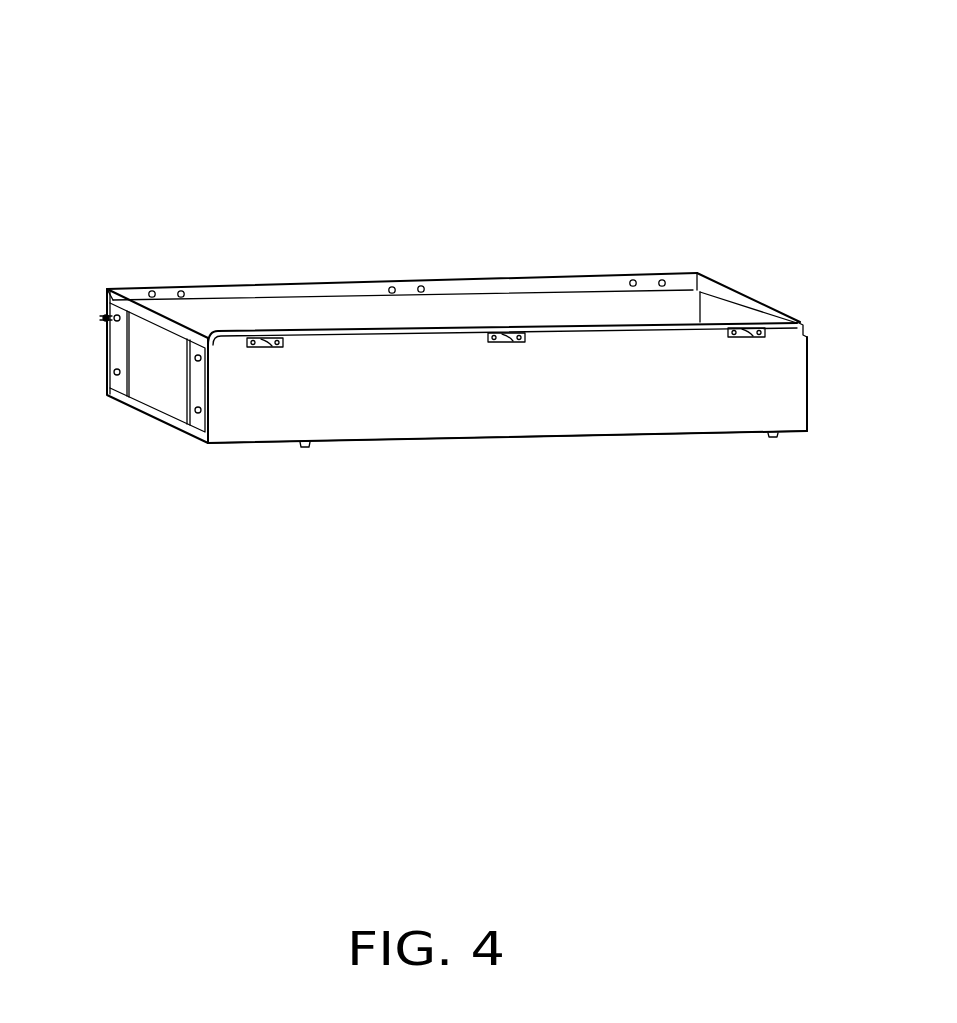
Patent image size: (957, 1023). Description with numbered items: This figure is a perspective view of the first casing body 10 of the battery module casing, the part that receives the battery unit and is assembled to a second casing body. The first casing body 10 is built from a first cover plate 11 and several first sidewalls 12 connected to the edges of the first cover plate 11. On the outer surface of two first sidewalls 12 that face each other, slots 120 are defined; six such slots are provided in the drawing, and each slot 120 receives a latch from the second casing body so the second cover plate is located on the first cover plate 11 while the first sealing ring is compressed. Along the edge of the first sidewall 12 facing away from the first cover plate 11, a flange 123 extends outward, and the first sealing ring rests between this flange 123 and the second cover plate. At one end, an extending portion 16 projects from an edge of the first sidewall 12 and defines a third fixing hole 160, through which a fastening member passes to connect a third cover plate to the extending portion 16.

The first casing body 10 is at (258, 76).
The first cover plate 11 is at (477, 438).
The first sidewall 12 is at (573, 410).
The slot 120 is at (263, 344).
The flange 123 is at (653, 325).
The extending portion 16 is at (117, 358).
The third fixing hole 160 is at (100, 318).